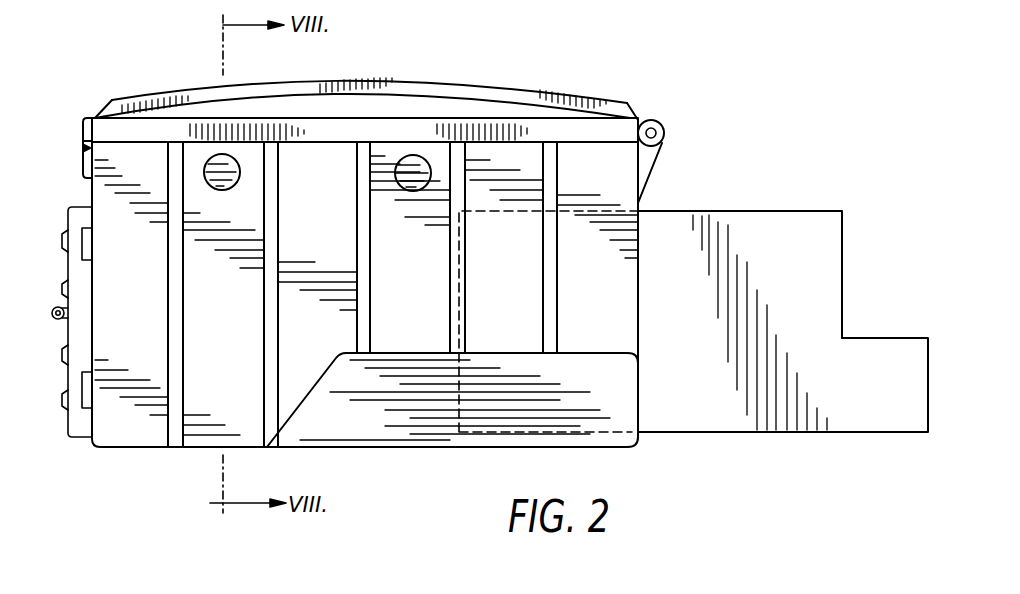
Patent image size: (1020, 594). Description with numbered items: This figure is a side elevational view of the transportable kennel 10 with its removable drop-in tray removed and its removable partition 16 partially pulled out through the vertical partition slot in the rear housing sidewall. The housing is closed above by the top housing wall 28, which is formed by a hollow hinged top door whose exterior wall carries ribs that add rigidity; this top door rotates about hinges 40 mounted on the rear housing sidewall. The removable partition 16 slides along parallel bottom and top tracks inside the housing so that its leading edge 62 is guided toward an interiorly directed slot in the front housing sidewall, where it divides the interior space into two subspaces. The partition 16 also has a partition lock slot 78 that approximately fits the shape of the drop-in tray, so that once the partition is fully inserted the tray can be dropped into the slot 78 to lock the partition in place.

The transportable kennel 10 is at (588, 66).
The top housing wall 28 is at (452, 97).
The hinges 40 is at (661, 126).
The leading edge 62 is at (456, 428).
The removable partition 16 is at (738, 215).
The partition lock slot 78 is at (844, 238).